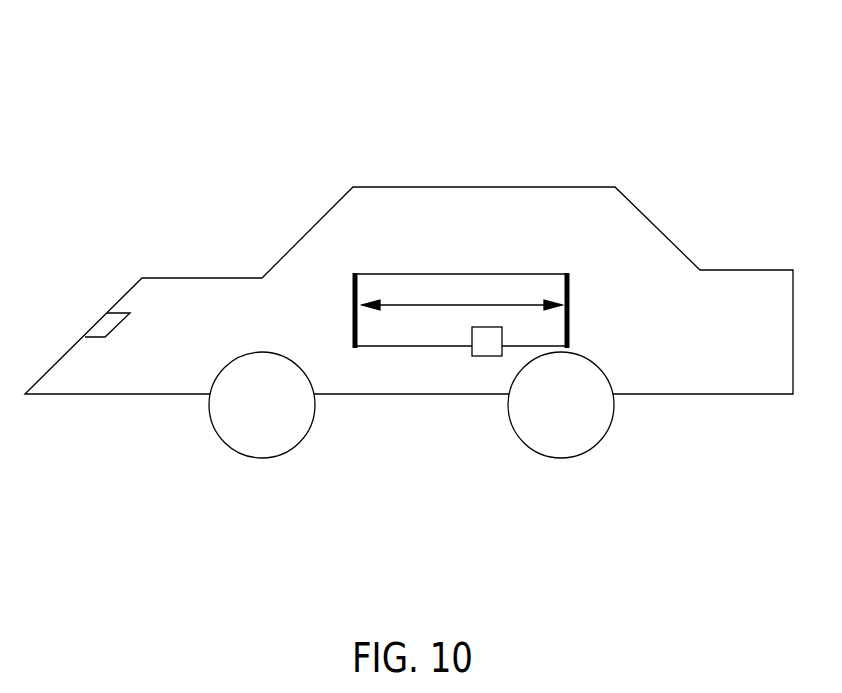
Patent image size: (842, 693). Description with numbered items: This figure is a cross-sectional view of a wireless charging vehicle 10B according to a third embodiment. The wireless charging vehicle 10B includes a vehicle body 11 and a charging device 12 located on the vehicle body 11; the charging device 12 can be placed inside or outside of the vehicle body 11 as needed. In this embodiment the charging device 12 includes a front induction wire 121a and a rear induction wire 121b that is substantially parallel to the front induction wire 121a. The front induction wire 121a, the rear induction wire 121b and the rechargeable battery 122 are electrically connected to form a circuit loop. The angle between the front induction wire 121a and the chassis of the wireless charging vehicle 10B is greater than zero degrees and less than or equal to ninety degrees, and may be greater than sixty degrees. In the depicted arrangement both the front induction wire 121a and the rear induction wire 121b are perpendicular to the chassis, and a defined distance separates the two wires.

The wireless charging vehicle 10B is at (409, 244).
The vehicle body 11 is at (293, 246).
The charging device 12 is at (561, 212).
The front induction wire 121a is at (358, 310).
The rear induction wire 121b is at (570, 295).
The rechargeable battery 122 is at (485, 337).